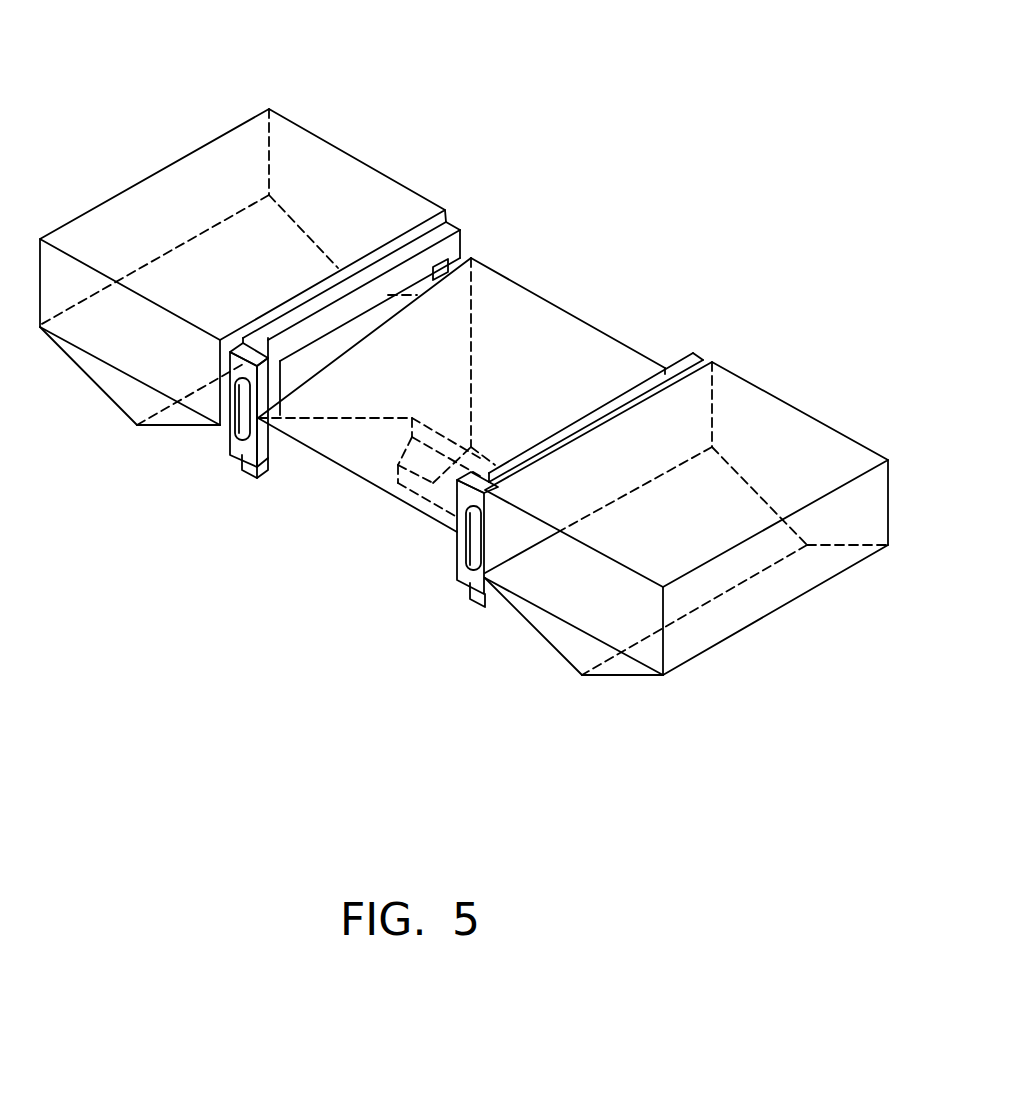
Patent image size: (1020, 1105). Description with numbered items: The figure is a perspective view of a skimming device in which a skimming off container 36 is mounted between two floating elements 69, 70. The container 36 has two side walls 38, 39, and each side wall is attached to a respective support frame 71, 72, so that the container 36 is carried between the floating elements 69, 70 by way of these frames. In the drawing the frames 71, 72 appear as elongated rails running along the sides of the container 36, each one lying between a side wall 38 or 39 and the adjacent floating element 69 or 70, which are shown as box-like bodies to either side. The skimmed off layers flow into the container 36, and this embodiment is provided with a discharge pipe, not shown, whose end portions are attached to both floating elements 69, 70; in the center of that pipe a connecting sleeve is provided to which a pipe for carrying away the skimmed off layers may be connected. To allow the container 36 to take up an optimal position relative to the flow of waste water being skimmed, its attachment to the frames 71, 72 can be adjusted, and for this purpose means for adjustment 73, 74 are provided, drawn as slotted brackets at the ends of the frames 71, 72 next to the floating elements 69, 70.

The skimming off container 36 is at (446, 385).
The side wall 38 is at (335, 395).
The side wall 39 is at (572, 467).
The floating element 69 is at (327, 138).
The floating element 70 is at (708, 507).
The support frame 71 is at (447, 221).
The support frame 72 is at (700, 356).
The means for adjustment 73 is at (260, 442).
The means for adjustment 74 is at (468, 577).